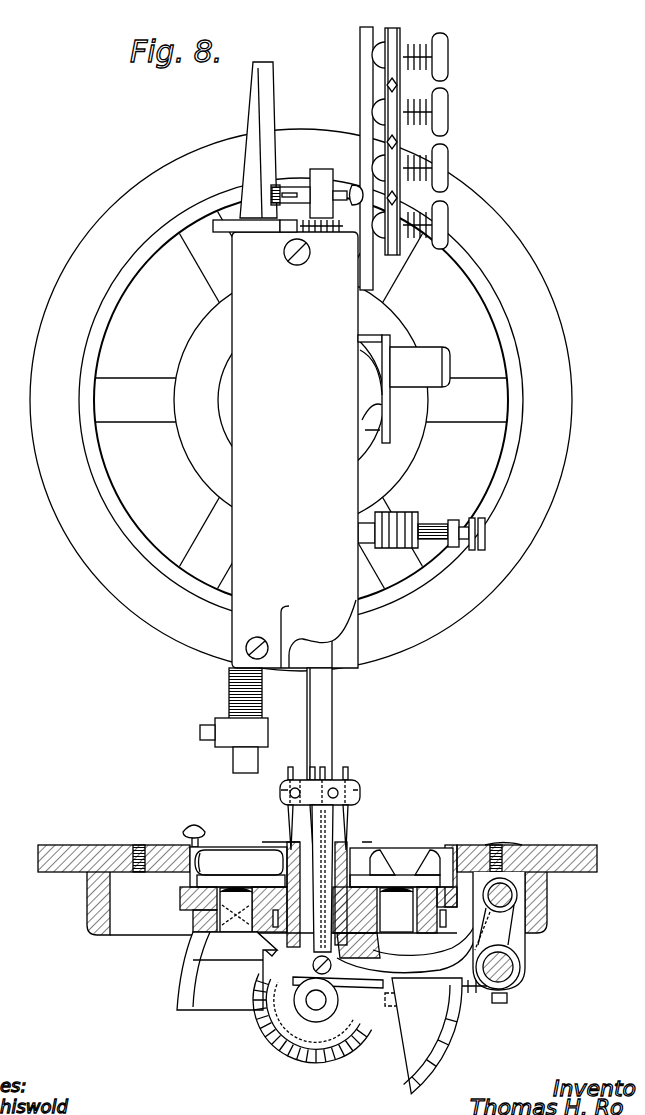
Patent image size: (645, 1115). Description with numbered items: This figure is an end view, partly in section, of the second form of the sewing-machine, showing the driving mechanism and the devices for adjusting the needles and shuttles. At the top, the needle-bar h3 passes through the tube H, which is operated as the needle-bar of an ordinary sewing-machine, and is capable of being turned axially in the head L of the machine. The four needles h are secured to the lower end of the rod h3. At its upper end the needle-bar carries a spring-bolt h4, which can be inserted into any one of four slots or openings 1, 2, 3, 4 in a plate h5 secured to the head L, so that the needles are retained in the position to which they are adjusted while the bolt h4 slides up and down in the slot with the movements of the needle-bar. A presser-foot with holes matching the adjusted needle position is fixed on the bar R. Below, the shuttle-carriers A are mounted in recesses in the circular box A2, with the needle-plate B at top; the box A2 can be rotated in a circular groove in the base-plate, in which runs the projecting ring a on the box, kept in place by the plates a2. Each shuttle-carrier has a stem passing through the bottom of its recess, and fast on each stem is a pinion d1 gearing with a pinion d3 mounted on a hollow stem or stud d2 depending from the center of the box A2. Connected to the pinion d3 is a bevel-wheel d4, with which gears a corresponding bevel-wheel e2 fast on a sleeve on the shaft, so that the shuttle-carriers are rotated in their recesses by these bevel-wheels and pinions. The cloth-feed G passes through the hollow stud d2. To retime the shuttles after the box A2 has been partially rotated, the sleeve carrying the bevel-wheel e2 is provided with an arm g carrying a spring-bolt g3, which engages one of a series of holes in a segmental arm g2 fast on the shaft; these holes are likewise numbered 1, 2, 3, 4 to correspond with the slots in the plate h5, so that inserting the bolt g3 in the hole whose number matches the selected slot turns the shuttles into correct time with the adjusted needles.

The head L is at (285, 444).
The plate h5 is at (272, 92).
The spring-bolt h4 is at (290, 192).
The needle-bar h3 is at (326, 178).
The bar R is at (253, 760).
The needles h is at (320, 808).
The needle-plate B is at (370, 842).
The circular box A2 is at (242, 847).
The projecting ring a is at (173, 847).
The plates a2 is at (122, 847).
The shuttle-carriers A is at (190, 886).
The pinion d1 is at (449, 920).
The hollow stem or stud d2 is at (263, 945).
The pinion d3 is at (373, 950).
The bevel-wheel d4 is at (369, 950).
The cloth-feed G is at (322, 878).
The arm g is at (317, 982).
The segmental arm g2 is at (183, 978).
The spring-bolt g3 is at (460, 1005).
The tube H is at (260, 1027).
The bevel-wheel e2 is at (313, 1050).
The slot or hole number one 1 is at (422, 1085).
The slot or hole number two 2 is at (438, 1066).
The slot or hole number three 3 is at (450, 1045).
The slot or hole number four 4 is at (459, 1022).